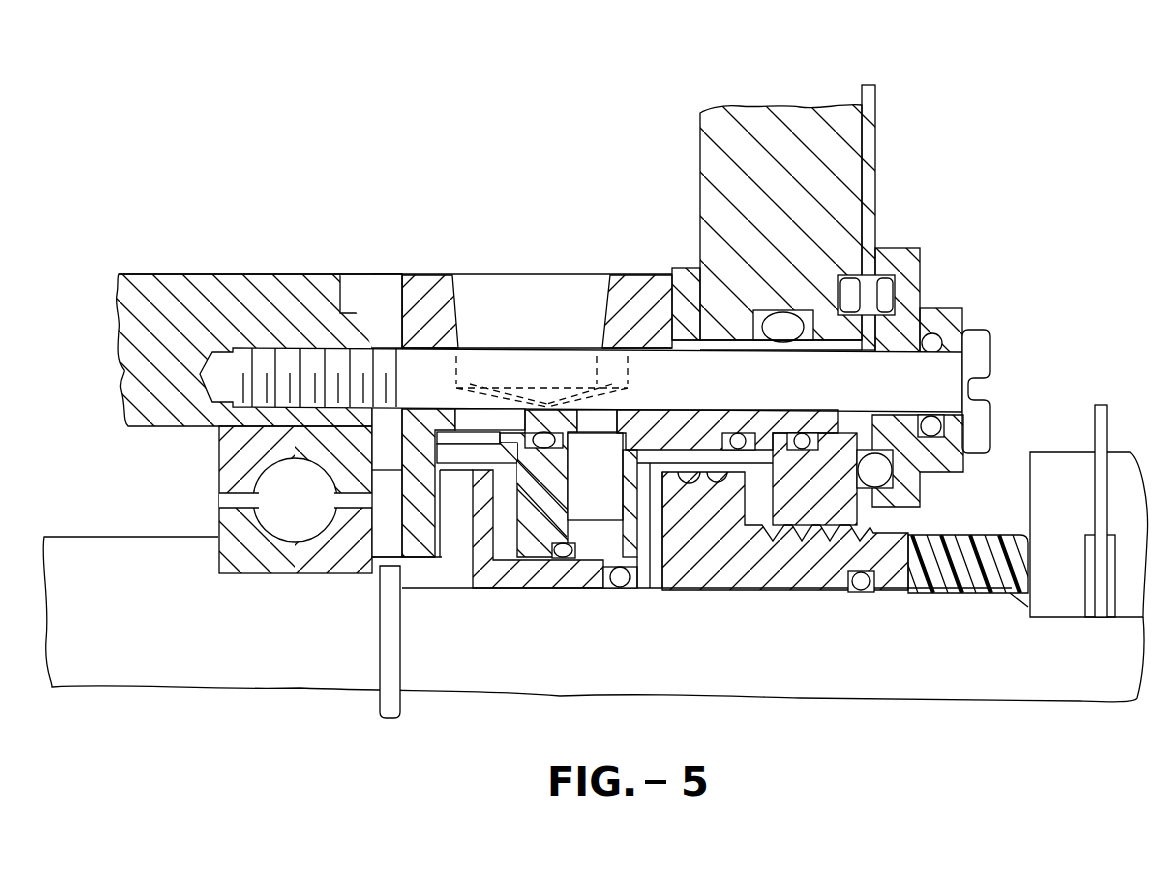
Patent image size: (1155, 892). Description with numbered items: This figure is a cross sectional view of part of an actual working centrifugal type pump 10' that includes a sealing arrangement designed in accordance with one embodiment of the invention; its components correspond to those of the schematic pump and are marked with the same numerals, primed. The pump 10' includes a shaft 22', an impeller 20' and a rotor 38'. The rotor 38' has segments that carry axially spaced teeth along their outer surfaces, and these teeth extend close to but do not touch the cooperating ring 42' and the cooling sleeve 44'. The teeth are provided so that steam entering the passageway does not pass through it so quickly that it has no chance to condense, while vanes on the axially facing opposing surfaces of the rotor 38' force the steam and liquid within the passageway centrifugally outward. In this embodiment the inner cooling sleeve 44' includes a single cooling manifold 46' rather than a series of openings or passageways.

The pump 10' is at (682, 219).
The impeller 20' is at (1089, 497).
The shaft 22' is at (593, 636).
The rotor 38' is at (762, 526).
The ring 42' is at (883, 479).
The cooling sleeve 44' is at (521, 553).
The cooling manifold 46' is at (595, 465).